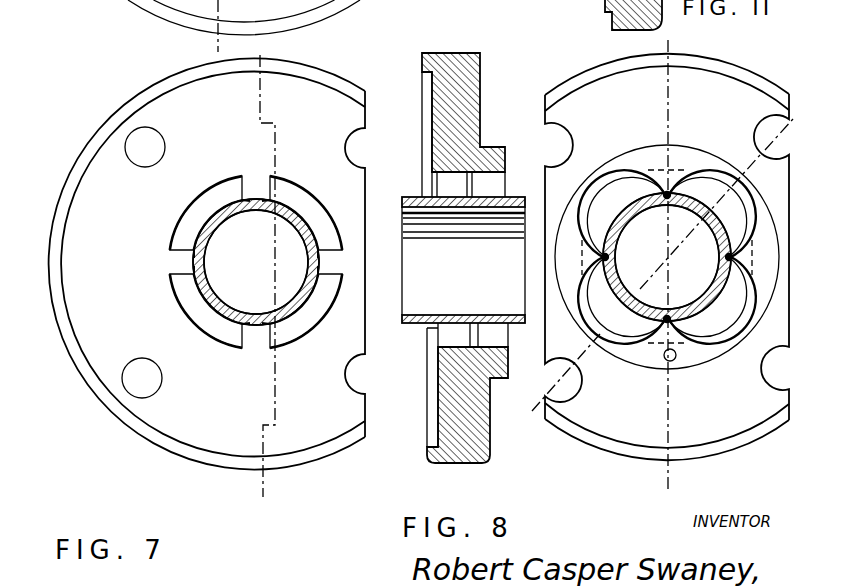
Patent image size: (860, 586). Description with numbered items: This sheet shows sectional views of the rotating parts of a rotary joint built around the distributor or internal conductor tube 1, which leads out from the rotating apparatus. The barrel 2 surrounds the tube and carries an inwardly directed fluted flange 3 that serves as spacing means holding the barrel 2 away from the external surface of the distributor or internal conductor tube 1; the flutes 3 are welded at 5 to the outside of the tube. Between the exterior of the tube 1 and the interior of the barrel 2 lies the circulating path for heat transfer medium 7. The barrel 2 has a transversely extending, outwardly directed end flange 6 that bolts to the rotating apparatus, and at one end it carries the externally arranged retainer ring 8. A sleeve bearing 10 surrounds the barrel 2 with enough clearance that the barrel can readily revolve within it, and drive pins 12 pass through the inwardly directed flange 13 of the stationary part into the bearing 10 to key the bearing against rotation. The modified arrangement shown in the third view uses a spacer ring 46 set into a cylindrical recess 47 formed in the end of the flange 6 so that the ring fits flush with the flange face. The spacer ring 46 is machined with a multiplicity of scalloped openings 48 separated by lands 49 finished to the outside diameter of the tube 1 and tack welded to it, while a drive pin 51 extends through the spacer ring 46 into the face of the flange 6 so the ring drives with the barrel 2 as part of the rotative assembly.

In FIG. 7, the distributor or internal conductor tube 1 is at (216, 318).
In FIG. 8, the distributor or internal conductor tube 1 is at (421, 313).
In FIG. 11, the distributor or internal conductor tube 1 is at (640, 322).
In FIG. 11, the barrel 2 is at (600, 190).
In FIG. 7, the fluted flange 3 is at (254, 208).
In FIG. 8, the fluted flange 3 is at (455, 205).
In FIG. 7, the weld 5 is at (318, 262).
In FIG. 8, the weld 5 is at (426, 194).
In FIG. 7, the end flange 6 is at (74, 188).
In FIG. 8, the end flange 6 is at (468, 112).
In FIG. 11, the end flange 6 is at (712, 88).
In FIG. 7, the circulating path for heat transfer medium 7 is at (214, 193).
In FIG. 8, the circulating path for heat transfer medium 7 is at (484, 178).
In FIG. 11, the circulating path for heat transfer medium 7 is at (728, 218).
In FIG. 7, the retainer ring 8 is at (238, 50).
In FIG. 7, the sleeve bearing 10 is at (235, 40).
In FIG. 11, the drive pins 12 is at (648, 43).
In FIG. 11, the inwardly directed flange 13 is at (776, 155).
In FIG. 11, the spacer ring 46 is at (682, 165).
In FIG. 11, the cylindrical recess 47 is at (648, 142).
In FIG. 11, the scalloped openings 48 is at (733, 263).
In FIG. 11, the lands 49 is at (667, 190).
In FIG. 11, the drive pin 51 is at (672, 362).